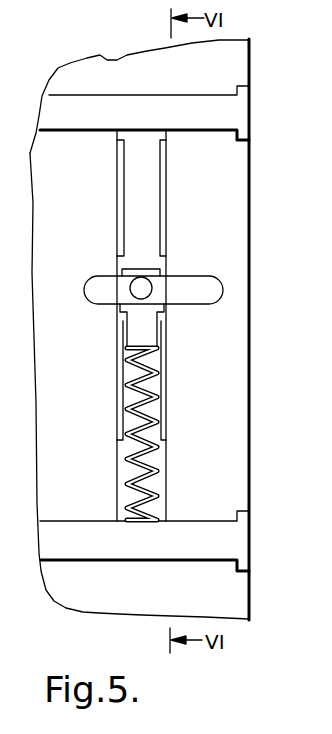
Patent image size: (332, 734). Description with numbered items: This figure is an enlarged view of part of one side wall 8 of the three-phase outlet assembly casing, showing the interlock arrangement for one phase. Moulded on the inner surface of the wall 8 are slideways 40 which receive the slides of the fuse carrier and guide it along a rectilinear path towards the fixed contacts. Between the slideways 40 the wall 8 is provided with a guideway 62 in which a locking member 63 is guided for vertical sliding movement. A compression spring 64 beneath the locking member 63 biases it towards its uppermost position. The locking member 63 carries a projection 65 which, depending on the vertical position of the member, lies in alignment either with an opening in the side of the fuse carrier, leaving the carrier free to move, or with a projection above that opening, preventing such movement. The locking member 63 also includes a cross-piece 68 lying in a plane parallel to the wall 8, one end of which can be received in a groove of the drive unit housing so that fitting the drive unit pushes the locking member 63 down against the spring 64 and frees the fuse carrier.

The wall 8 is at (230, 202).
The slideway 40 is at (181, 87).
The guideway 62 is at (156, 328).
The locking member 63 is at (145, 269).
The compression spring 64 is at (147, 410).
The projection 65 is at (125, 284).
The cross-piece 68 is at (210, 282).